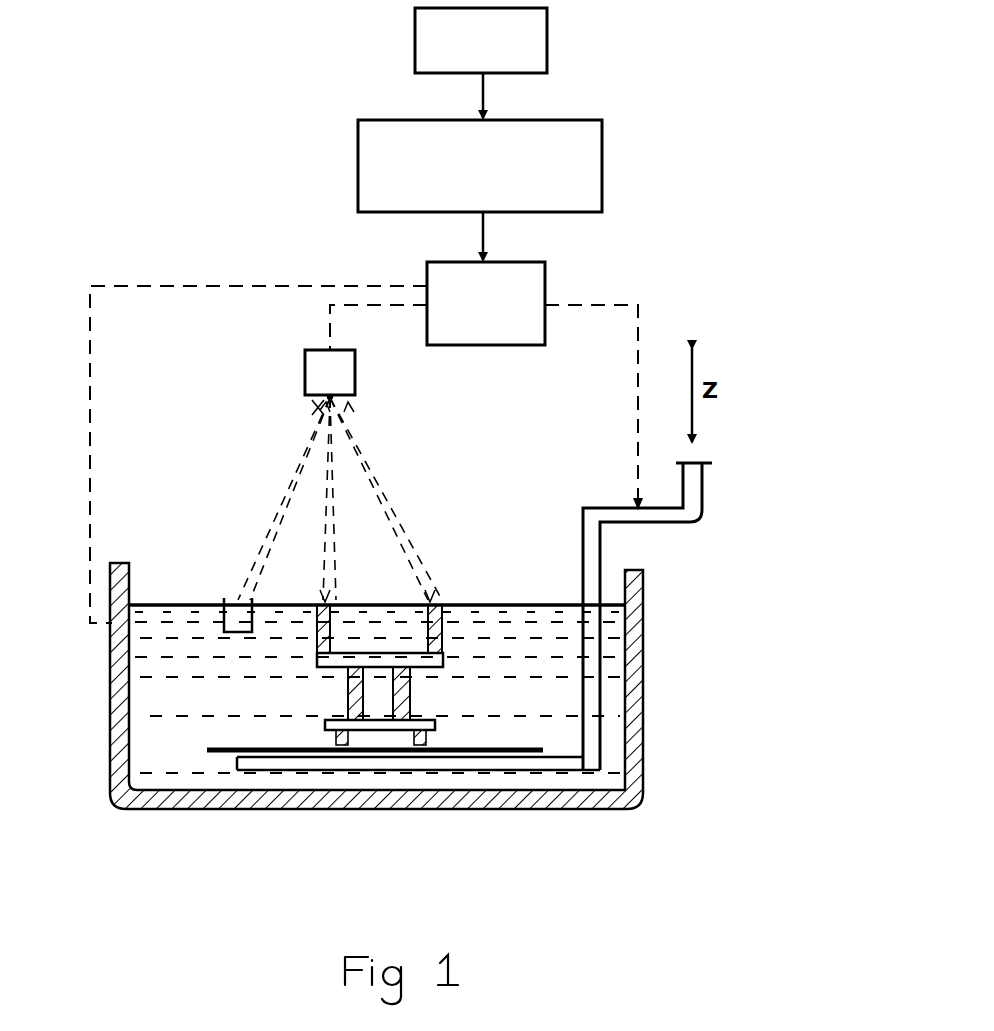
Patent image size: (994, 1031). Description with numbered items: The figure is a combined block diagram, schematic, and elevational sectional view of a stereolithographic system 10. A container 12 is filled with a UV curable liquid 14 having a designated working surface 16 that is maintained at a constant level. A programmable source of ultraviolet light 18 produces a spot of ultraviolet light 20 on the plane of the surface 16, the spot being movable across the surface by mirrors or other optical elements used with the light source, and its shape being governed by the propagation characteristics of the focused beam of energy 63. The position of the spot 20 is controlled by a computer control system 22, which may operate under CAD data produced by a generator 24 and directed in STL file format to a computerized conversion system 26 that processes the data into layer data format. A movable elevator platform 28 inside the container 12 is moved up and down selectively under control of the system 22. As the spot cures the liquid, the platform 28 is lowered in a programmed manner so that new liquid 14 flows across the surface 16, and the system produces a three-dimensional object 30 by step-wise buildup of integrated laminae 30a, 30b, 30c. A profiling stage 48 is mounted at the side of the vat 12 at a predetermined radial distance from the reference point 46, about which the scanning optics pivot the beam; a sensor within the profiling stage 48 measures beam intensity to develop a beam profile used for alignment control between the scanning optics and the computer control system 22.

The stereolithographic system 10 is at (780, 276).
The container 12 is at (110, 660).
The UV curable liquid 14 is at (218, 711).
The working surface 16 is at (160, 604).
The programmable source of ultraviolet light 18 is at (350, 380).
The spot of ultraviolet light 20 is at (430, 605).
The computer control system 22 is at (545, 286).
The CAD data generator 24 is at (547, 43).
The computerized conversion system 26 is at (602, 167).
The movable elevator platform 28 is at (565, 772).
The three-dimensional object 30 is at (338, 688).
The lamina 30a is at (442, 614).
The lamina 30b is at (443, 640).
The lamina 30c is at (430, 667).
The reference point 46 is at (310, 412).
The profiling stage 48 is at (240, 600).
The focused beam of energy 63 is at (296, 455).